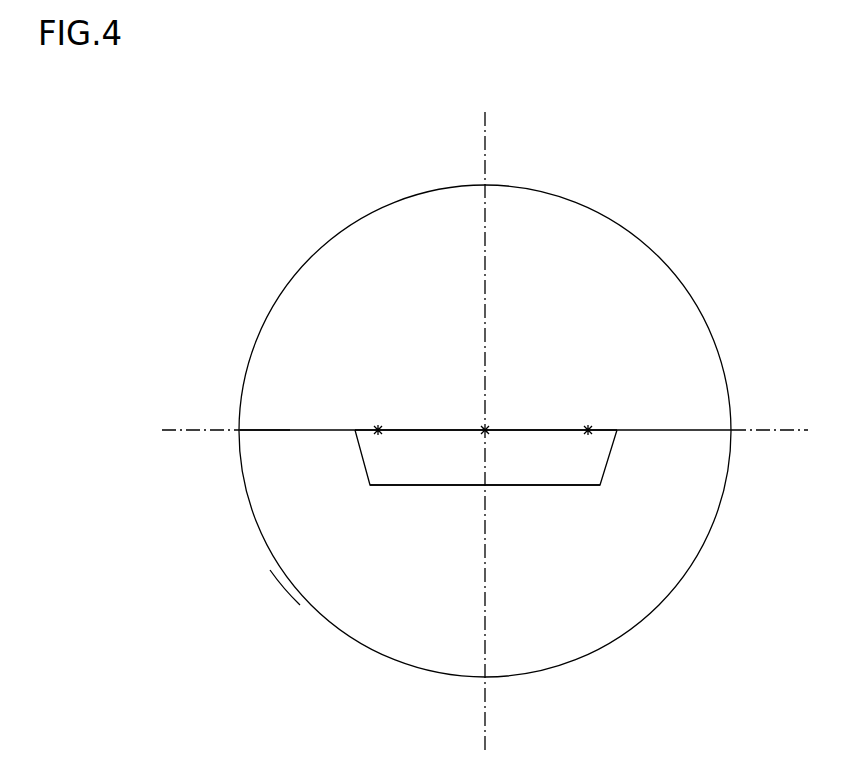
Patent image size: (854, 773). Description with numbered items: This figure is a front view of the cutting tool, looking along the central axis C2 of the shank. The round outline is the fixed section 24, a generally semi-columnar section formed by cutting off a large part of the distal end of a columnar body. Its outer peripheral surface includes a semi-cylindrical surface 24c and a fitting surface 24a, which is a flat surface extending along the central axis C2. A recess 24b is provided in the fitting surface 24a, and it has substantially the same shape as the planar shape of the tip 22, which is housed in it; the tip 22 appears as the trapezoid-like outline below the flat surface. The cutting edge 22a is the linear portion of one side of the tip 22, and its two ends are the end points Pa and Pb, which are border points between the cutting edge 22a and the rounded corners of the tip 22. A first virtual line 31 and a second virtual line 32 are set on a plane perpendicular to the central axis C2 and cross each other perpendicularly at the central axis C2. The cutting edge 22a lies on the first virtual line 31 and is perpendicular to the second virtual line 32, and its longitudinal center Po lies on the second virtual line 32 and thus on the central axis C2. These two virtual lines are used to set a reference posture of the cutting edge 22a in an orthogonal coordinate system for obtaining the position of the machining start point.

The second virtual line 32 is at (485, 142).
The first virtual line 31 is at (772, 430).
The fixed section 24 is at (682, 577).
The fitting surface 24a is at (263, 428).
The recess 24b is at (528, 485).
The semi-cylindrical surface 24c is at (282, 583).
The tip 22 is at (422, 460).
The cutting edge 22a is at (437, 428).
The end point Pb is at (378, 428).
The end point Pa is at (588, 428).
The central axis C2 is at (485, 428).
The center Po is at (485, 430).